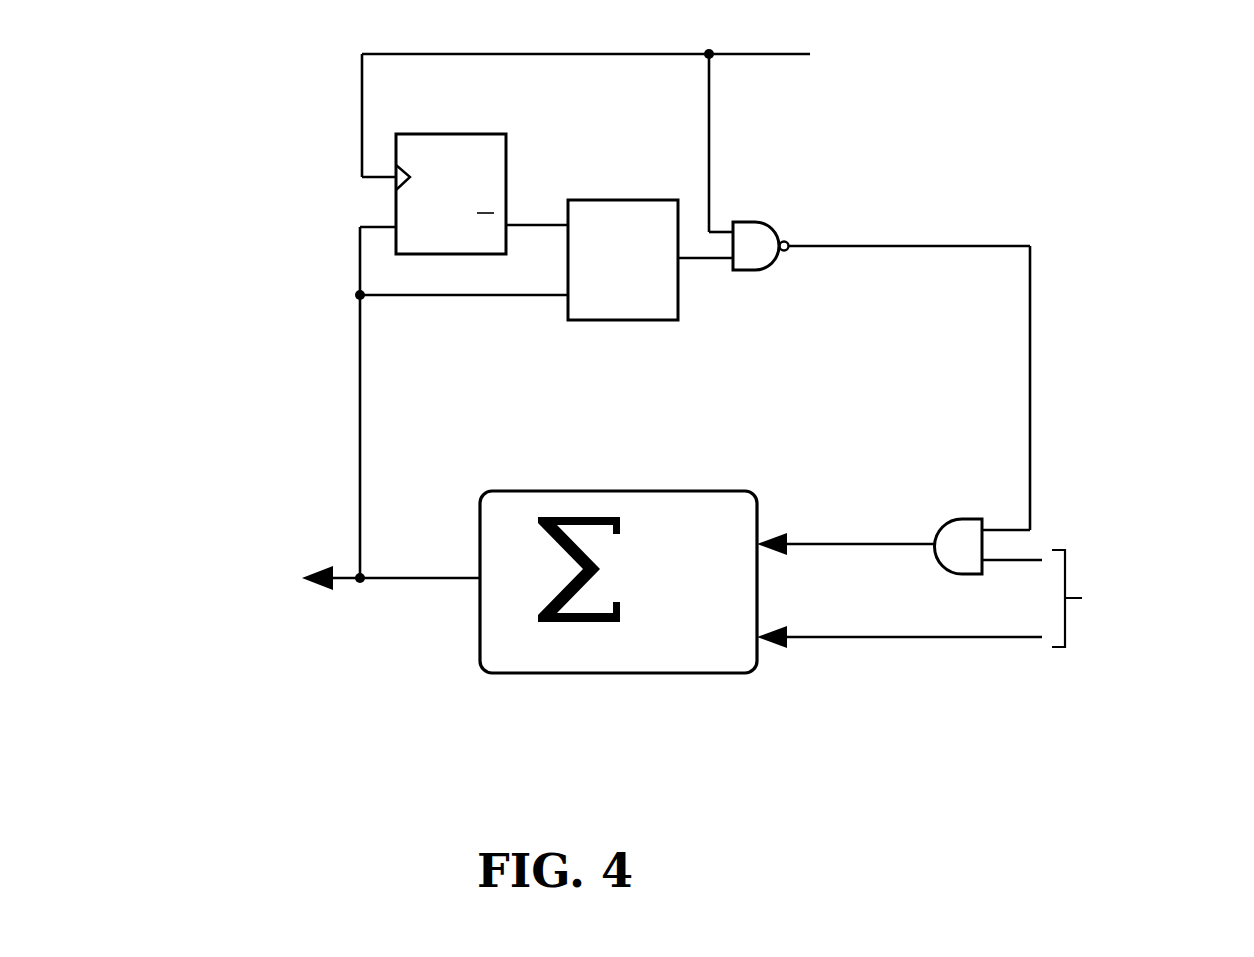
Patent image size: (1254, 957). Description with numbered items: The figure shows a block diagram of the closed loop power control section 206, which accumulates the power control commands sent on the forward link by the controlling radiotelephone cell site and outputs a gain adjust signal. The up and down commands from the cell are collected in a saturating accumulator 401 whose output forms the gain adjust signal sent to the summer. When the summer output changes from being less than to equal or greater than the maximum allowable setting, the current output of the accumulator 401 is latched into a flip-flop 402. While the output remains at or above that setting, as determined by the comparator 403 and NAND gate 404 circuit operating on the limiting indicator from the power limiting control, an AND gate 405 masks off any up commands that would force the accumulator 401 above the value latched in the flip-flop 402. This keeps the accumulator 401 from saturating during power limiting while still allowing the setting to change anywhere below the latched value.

The closed loop power control section 206 is at (548, 828).
The accumulator 401 is at (752, 490).
The flip-flop 402 is at (507, 154).
The comparator 403 is at (679, 306).
The NAND gate 404 is at (758, 224).
The AND gate 405 is at (941, 526).